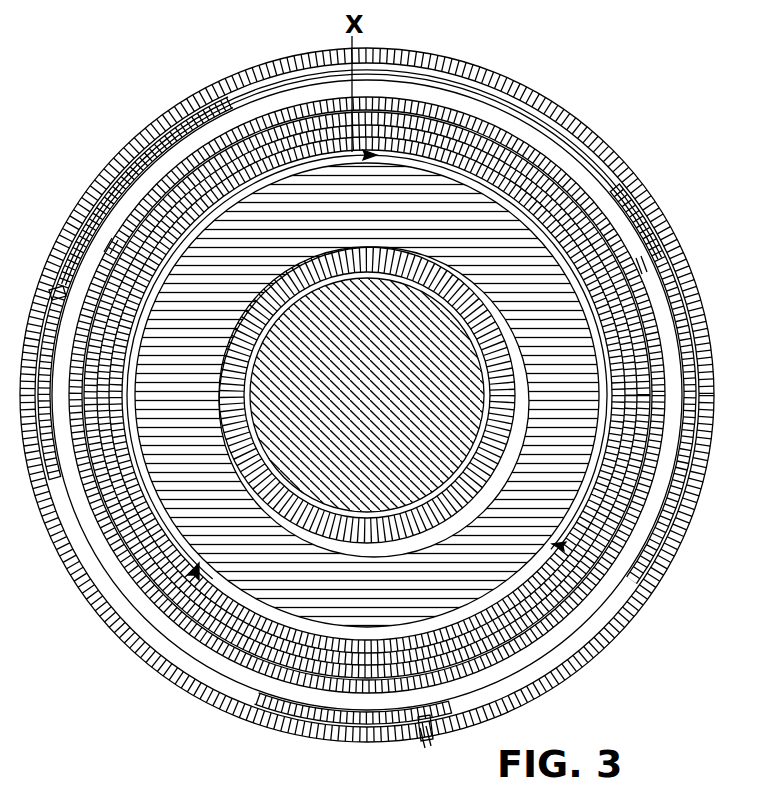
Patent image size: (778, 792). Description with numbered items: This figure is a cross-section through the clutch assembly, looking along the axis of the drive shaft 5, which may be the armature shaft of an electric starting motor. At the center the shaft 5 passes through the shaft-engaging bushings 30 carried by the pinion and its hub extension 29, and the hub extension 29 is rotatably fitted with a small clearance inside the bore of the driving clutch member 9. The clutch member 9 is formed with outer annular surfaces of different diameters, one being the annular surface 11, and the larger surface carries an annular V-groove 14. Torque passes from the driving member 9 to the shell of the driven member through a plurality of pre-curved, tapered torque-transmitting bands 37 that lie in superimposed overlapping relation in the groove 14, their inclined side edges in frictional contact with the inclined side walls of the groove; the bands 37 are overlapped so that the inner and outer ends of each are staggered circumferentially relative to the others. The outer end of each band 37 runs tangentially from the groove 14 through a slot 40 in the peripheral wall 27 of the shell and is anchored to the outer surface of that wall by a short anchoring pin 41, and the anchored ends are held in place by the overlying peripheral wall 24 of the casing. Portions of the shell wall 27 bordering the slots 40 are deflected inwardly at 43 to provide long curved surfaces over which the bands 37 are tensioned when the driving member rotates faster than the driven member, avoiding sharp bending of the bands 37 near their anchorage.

The drive shaft 5 is at (265, 392).
The driving clutch member 9 is at (133, 600).
The outer annular surface 11 is at (605, 192).
The annular V-groove 14 is at (556, 546).
The peripheral wall of casing 24 is at (423, 50).
The peripheral wall of shell 27 is at (500, 93).
The hub extension 29 is at (230, 463).
The shaft-engaging bushings 30 is at (443, 507).
The torque-transmitting bands 37 is at (247, 100).
The slot 40 is at (115, 198).
The anchoring pin 41 is at (68, 298).
The inwardly deflected portions 43 is at (110, 244).